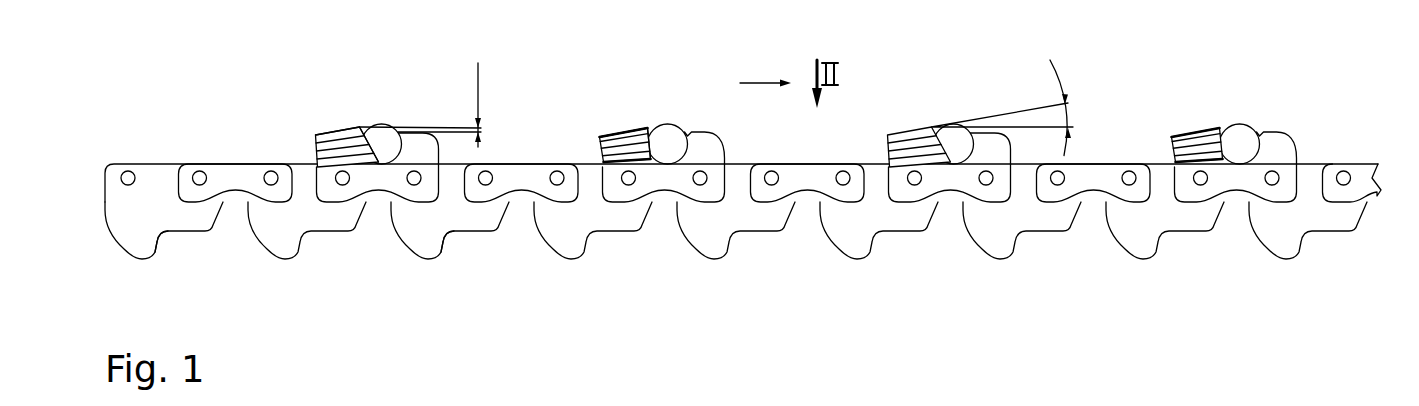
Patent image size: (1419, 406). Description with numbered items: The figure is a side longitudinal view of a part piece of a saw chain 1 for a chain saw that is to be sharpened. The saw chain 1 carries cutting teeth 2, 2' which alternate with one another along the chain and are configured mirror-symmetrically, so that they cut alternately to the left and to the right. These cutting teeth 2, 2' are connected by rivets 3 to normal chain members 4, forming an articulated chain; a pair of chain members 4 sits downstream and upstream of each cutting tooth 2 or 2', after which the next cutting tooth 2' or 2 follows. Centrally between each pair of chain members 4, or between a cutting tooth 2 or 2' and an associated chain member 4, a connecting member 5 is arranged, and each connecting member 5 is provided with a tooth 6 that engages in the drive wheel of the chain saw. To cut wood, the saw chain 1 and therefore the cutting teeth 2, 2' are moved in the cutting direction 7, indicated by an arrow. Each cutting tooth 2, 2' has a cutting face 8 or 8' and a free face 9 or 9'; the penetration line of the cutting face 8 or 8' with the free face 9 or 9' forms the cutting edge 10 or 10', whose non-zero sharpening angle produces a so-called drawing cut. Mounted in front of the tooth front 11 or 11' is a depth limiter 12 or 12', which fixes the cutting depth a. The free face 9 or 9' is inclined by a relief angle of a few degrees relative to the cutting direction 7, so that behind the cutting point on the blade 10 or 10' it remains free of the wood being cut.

The saw chain 1 is at (864, 88).
The cutting tooth 2 is at (606, 114).
The cutting tooth 2' is at (887, 111).
The rivet 3 is at (270, 171).
The chain member 4 is at (530, 177).
The connecting member 5 is at (132, 246).
The tooth 6 is at (160, 247).
The cutting direction 7 is at (760, 83).
The cutting face 8 is at (377, 111).
The cutting face 8' is at (664, 110).
The free face 9 is at (339, 110).
The free face 9' is at (615, 111).
The cutting edge 10 is at (947, 112).
The cutting edge 10' is at (1234, 112).
The tooth front 11 is at (379, 105).
The tooth front 11' is at (665, 104).
The depth limiter 12 is at (990, 112).
The depth limiter 12' is at (1283, 112).
The cutting depth a is at (421, 105).